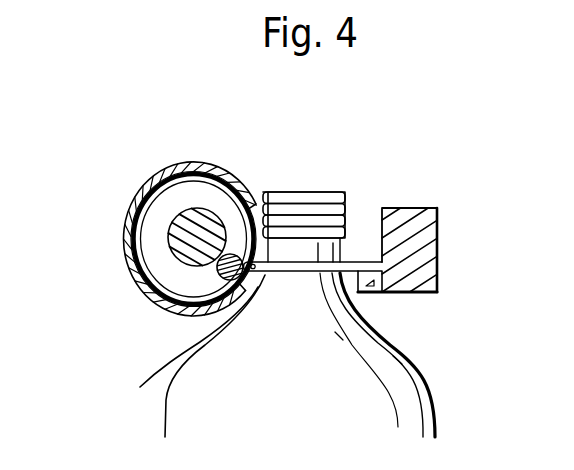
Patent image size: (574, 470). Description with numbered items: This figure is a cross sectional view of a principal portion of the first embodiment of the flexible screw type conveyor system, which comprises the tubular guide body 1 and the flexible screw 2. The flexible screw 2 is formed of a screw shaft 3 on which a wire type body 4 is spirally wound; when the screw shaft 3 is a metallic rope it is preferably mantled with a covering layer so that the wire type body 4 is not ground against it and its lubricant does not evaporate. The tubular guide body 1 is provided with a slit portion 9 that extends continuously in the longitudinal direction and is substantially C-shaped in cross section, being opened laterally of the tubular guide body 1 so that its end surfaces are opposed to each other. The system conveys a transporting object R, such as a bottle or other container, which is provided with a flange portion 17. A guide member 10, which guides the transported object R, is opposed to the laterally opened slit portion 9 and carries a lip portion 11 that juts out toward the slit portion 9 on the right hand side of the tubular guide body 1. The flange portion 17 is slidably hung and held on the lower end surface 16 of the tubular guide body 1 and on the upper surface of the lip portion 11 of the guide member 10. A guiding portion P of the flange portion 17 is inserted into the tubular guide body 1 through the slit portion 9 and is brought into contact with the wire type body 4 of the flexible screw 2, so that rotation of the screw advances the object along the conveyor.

The tubular guide body 1 is at (137, 197).
The flexible screw 2 is at (177, 173).
The screw shaft 3 is at (172, 260).
The wire type body 4 is at (128, 258).
The slit portion 9 is at (256, 226).
The guide member 10 is at (404, 210).
The lip portion 11 is at (388, 295).
The lower end surface 16 is at (187, 355).
The flange portion 17 is at (356, 262).
The guiding portion P is at (220, 268).
The transporting object R is at (433, 386).